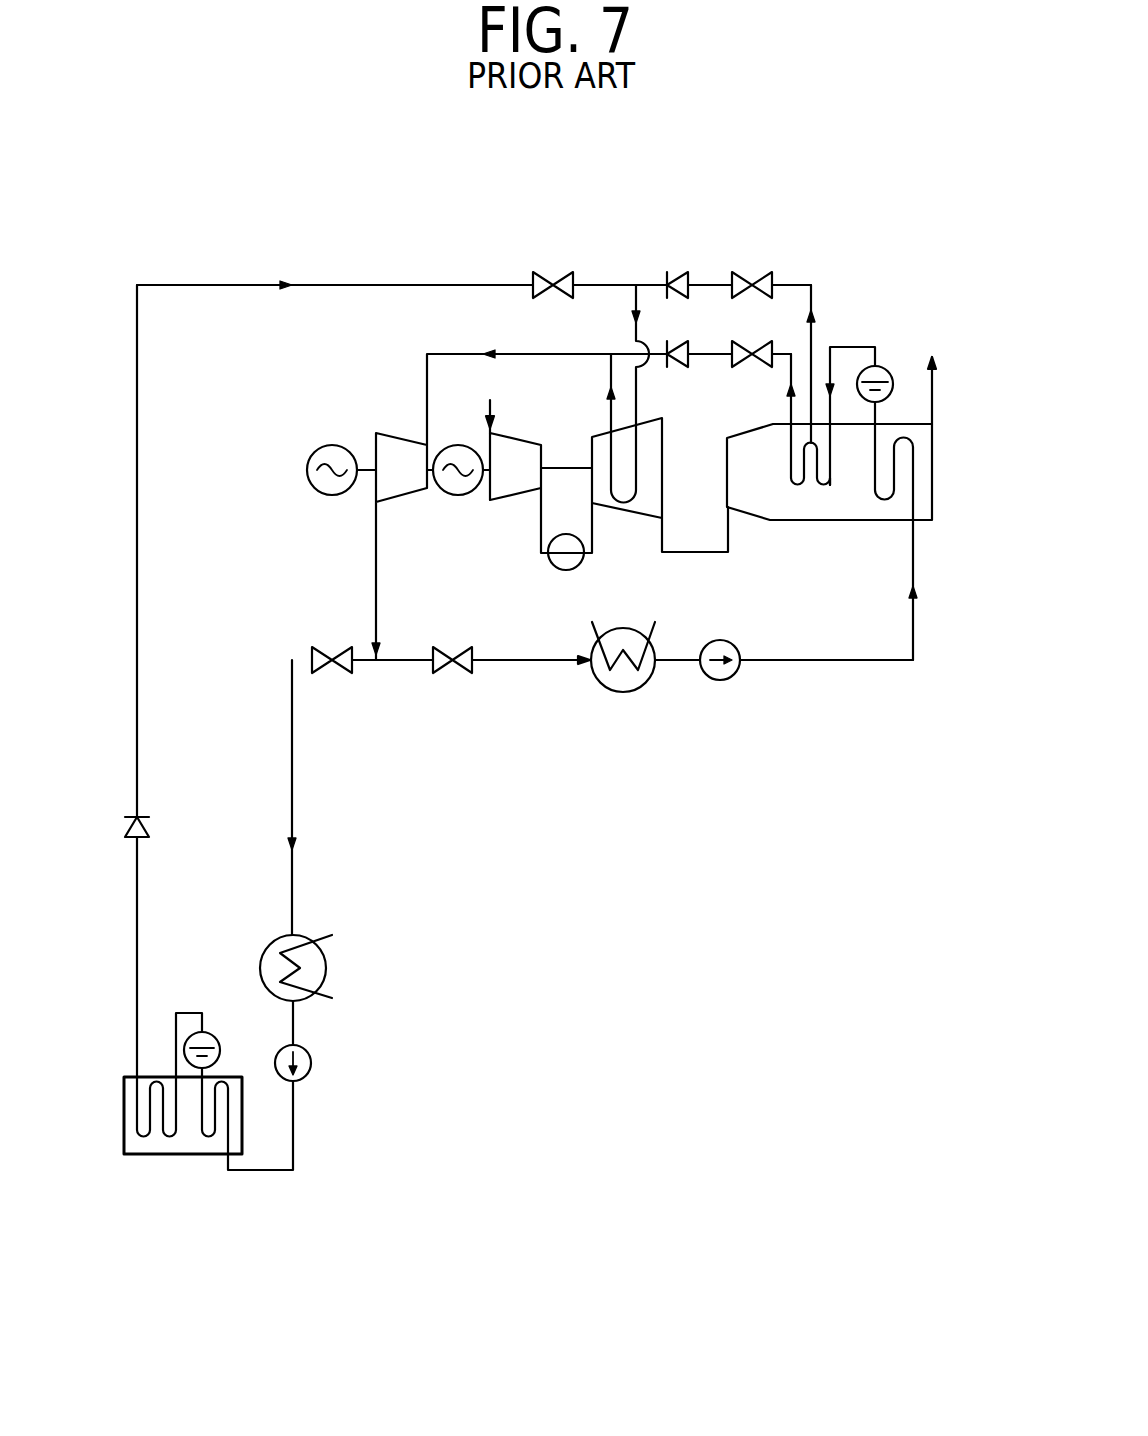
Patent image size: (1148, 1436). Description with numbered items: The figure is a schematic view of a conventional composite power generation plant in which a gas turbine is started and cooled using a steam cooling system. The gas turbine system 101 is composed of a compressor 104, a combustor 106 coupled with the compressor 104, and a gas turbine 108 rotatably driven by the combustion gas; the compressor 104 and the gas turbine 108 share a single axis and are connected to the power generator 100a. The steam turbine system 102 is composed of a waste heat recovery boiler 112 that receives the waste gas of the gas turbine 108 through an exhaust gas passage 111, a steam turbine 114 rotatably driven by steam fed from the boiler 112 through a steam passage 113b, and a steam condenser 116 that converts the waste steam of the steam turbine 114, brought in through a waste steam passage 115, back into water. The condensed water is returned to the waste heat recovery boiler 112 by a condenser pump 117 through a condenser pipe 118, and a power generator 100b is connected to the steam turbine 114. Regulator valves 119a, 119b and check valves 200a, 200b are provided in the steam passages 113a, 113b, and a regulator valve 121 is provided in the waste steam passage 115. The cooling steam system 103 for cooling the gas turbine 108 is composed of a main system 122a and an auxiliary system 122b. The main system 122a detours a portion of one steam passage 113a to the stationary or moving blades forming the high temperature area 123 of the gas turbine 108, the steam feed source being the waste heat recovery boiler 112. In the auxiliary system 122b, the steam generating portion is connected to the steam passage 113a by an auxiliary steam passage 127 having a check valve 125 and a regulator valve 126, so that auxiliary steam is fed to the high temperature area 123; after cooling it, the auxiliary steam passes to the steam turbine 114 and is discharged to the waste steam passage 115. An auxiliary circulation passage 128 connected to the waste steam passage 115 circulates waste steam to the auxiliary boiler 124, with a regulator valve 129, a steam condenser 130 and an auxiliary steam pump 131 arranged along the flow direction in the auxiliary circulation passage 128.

The power generator 100a is at (455, 495).
The power generator 100b is at (307, 470).
The gas turbine system 101 is at (567, 450).
The steam turbine system 102 is at (363, 452).
The cooling steam system 103 is at (636, 292).
The compressor 104 is at (505, 502).
The combustor 106 is at (565, 571).
The gas turbine 108 is at (662, 488).
The exhaust gas passage 111 is at (697, 553).
The waste heat recovery boiler 112 is at (783, 522).
The steam passage 113a is at (800, 285).
The steam passage 113b is at (792, 353).
The steam turbine 114 is at (392, 432).
The waste steam passage 115 is at (523, 662).
The steam condenser 116 is at (650, 678).
The condenser pump 117 is at (733, 677).
The condenser pipe 118 is at (837, 661).
The regulator valve 119a is at (734, 273).
The regulator valve 119b is at (752, 367).
The regulator valve 121 is at (433, 673).
The main system 122a is at (857, 347).
The auxiliary system 122b is at (258, 285).
The high temperature area 123 is at (623, 493).
The auxiliary boiler 124 is at (172, 1155).
The check valve 125 is at (147, 816).
The regulator valve 126 is at (538, 273).
The auxiliary steam passage 127 is at (137, 417).
The auxiliary circulation passage 128 is at (293, 820).
The regulator valve 129 is at (312, 652).
The steam condenser 130 is at (297, 935).
The auxiliary steam pump 131 is at (313, 1063).
The check valve 200a is at (686, 275).
The check valve 200b is at (686, 353).